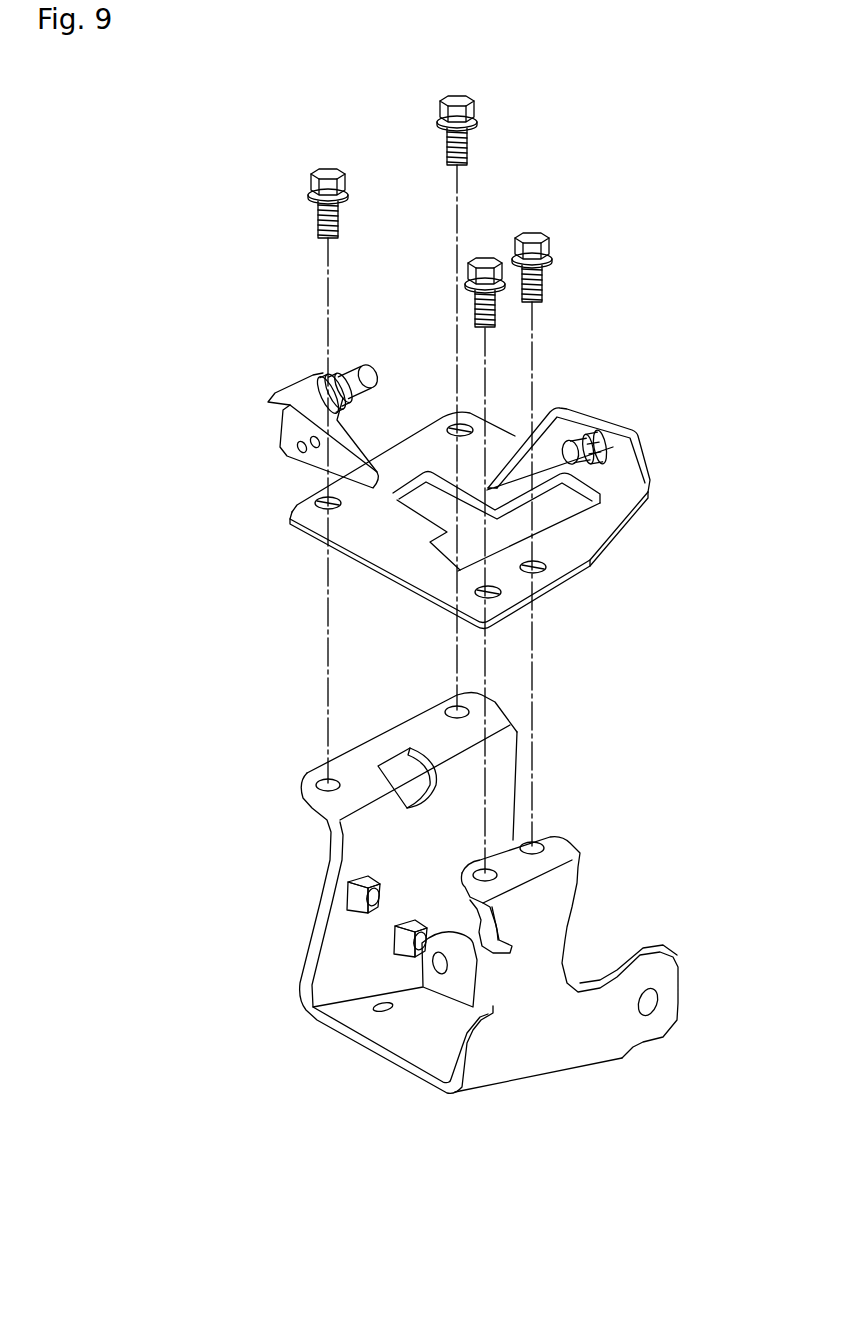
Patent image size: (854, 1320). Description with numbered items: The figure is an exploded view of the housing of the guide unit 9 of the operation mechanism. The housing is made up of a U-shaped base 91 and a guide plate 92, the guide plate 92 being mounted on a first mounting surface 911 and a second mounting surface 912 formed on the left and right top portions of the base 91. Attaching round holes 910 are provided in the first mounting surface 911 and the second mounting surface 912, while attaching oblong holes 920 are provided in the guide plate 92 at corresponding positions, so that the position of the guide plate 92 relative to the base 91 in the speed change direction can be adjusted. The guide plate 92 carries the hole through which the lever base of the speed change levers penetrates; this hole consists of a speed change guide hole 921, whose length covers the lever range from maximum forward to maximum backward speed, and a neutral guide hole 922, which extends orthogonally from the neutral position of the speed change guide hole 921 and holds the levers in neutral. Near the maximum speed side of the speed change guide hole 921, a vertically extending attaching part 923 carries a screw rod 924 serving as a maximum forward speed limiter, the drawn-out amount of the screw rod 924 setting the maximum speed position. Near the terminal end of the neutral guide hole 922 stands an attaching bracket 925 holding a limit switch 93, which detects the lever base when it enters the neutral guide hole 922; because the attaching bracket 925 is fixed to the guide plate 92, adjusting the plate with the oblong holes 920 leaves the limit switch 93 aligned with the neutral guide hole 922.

The guide unit 9 is at (458, 611).
The U-shaped base 91 is at (462, 883).
The attaching round holes 910 is at (457, 707).
The first mounting surface 911 is at (547, 845).
The second mounting surface 912 is at (392, 738).
The guide plate 92 is at (484, 507).
The attaching oblong holes 920 is at (455, 428).
The speed change guide hole 921 is at (598, 505).
The neutral guide hole 922 is at (430, 500).
The attaching part 923 is at (625, 462).
The screw rod 924 is at (572, 437).
The attaching bracket 925 is at (297, 398).
The limit switch 93 is at (372, 372).